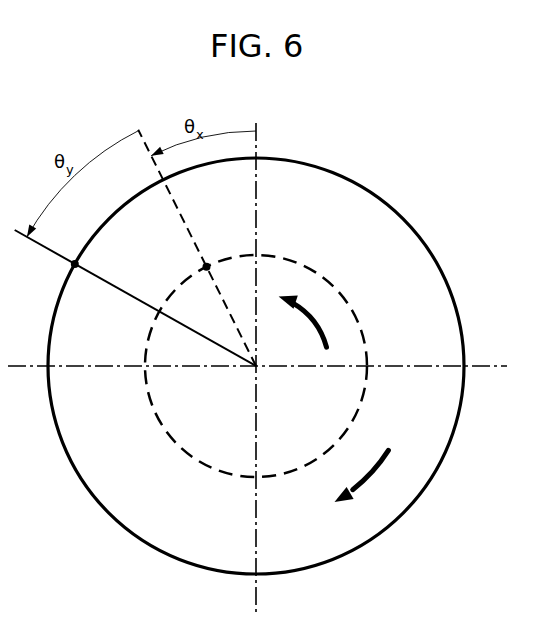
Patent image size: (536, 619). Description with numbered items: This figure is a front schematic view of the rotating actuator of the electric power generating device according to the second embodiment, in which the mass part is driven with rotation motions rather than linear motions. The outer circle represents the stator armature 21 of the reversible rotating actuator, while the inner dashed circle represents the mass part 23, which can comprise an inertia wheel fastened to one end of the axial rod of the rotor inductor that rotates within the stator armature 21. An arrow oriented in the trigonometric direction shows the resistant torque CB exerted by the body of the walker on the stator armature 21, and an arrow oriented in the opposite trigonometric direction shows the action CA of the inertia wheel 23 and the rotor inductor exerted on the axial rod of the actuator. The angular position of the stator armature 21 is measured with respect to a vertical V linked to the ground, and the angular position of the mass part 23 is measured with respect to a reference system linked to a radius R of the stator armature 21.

The stator armature 21 is at (160, 427).
The mass part 23 is at (411, 227).
The radius of the stator armature R is at (191, 235).
The vertical V is at (257, 357).
The action of the inertia wheel and rotor inductor CA is at (362, 476).
The resistant torque CB is at (311, 322).